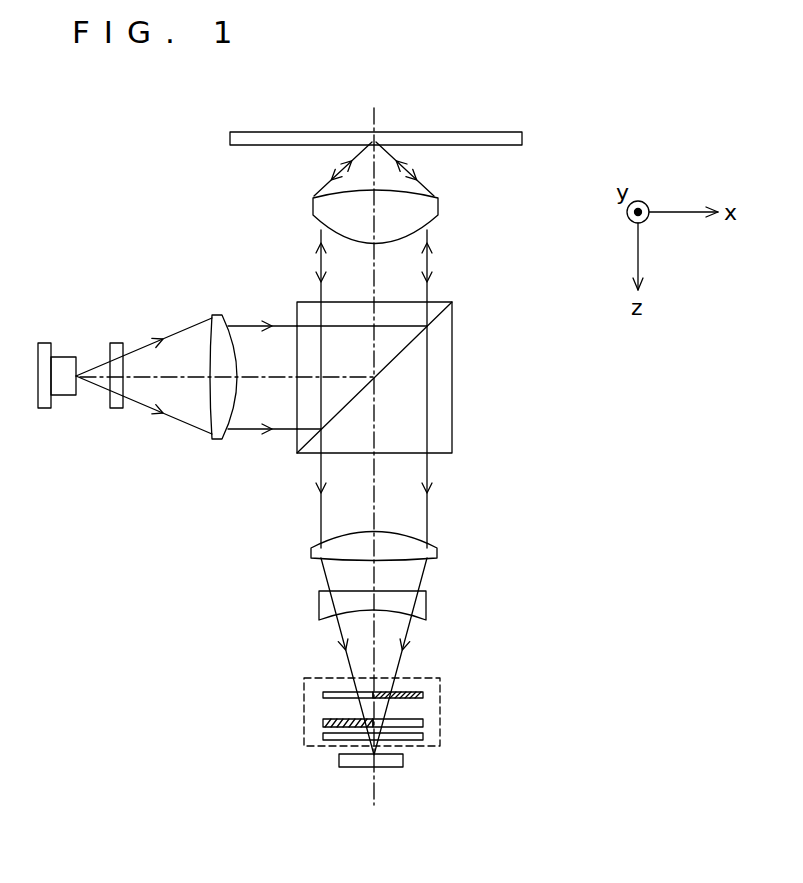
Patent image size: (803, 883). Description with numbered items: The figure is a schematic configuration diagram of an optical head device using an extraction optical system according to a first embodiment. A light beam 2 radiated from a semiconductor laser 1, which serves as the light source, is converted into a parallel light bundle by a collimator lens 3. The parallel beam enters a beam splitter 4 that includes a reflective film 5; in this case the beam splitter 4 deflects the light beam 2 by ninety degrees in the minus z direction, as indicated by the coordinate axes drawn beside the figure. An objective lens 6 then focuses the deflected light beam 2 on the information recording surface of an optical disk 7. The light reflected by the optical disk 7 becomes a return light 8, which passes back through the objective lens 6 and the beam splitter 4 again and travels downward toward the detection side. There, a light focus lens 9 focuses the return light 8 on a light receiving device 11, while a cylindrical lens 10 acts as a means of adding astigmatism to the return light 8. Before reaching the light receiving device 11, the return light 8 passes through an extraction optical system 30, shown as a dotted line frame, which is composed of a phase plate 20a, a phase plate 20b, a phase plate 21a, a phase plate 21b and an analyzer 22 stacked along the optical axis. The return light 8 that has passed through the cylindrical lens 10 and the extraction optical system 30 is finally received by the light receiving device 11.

The semiconductor laser 1 is at (46, 343).
The light beam 2 is at (139, 344).
The collimator lens 3 is at (218, 315).
The beam splitter 4 is at (452, 378).
The reflective film 5 is at (446, 309).
The objective lens 6 is at (438, 205).
The optical disk 7 is at (522, 138).
The return light 8 is at (430, 238).
The light focus lens 9 is at (437, 552).
The cylindrical lens 10 is at (426, 601).
The light receiving device 11 is at (403, 760).
The phase plate 20a is at (323, 695).
The phase plate 20b is at (423, 695).
The phase plate 21a is at (423, 722).
The phase plate 21b is at (323, 722).
The analyzer 22 is at (423, 737).
The extraction optical system 30 is at (428, 676).